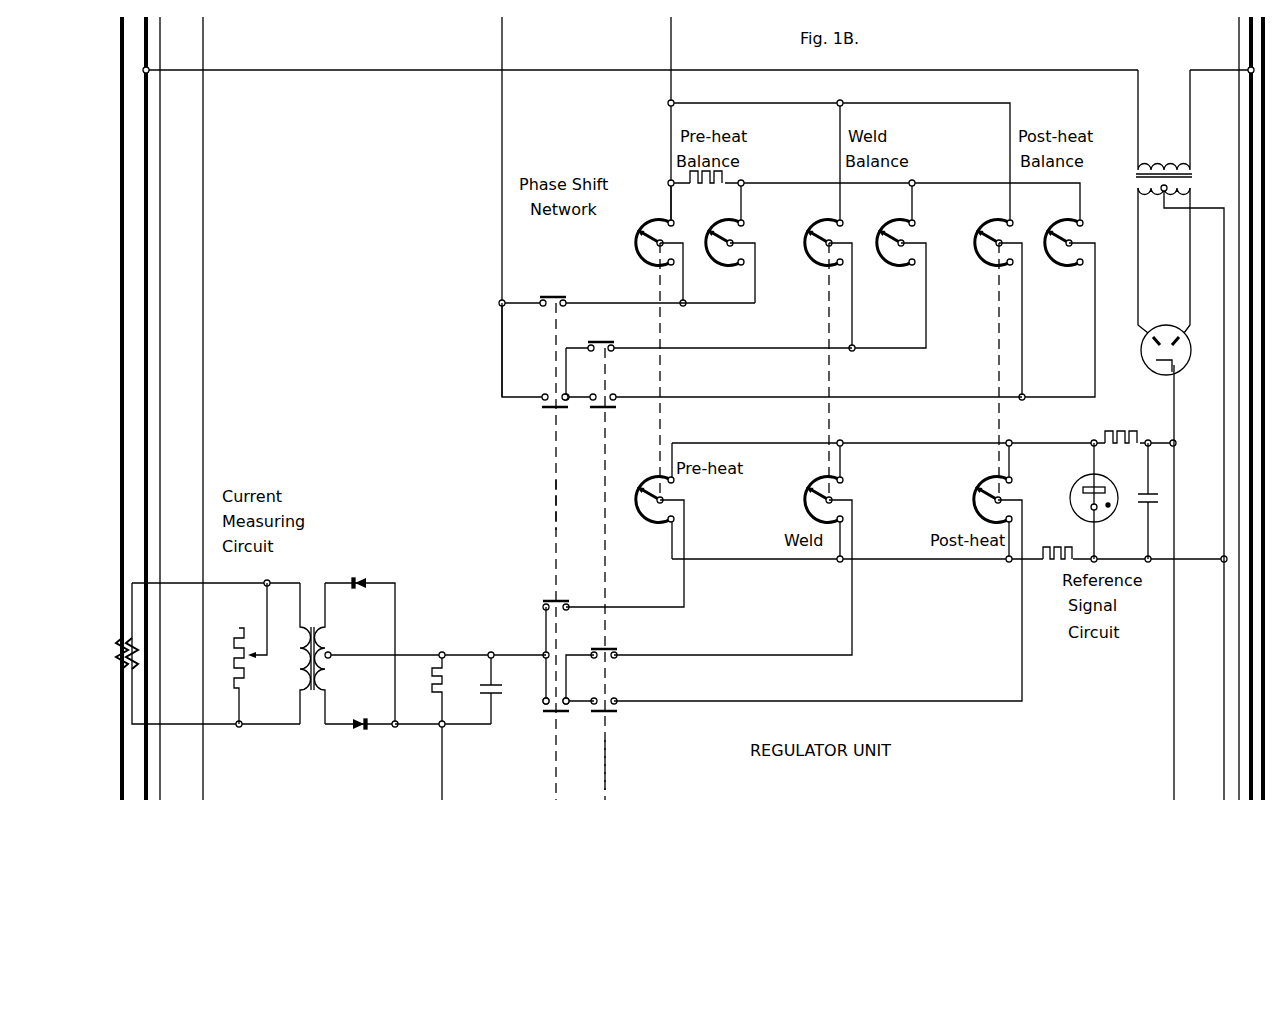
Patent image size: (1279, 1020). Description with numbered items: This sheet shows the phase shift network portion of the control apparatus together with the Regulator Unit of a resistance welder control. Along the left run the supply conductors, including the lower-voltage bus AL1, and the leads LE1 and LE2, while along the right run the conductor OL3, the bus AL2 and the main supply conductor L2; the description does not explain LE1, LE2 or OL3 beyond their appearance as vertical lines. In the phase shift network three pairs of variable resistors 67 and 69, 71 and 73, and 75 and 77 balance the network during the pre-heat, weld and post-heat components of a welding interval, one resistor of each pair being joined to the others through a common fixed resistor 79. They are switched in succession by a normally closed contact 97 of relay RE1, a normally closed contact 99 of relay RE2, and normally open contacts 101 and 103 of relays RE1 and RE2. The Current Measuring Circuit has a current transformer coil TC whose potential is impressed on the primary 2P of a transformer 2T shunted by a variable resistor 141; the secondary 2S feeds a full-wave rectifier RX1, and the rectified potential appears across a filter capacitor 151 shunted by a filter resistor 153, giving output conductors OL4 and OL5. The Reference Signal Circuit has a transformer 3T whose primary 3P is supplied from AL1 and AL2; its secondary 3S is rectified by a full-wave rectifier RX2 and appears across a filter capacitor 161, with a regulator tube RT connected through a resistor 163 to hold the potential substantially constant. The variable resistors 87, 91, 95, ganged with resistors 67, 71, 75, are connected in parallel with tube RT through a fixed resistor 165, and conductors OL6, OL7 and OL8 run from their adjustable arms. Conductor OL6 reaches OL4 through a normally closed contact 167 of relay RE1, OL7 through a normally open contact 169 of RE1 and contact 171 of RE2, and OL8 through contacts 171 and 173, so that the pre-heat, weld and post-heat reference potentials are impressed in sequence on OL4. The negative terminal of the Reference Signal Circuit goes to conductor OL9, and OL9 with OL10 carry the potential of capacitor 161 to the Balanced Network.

The pre-heat balance variable resistor 67 is at (643, 256).
The pre-heat balance variable resistor 69 is at (713, 256).
The weld balance variable resistor 71 is at (812, 256).
The weld balance variable resistor 73 is at (884, 256).
The post-heat balance variable resistor 75 is at (982, 256).
The post-heat balance variable resistor 77 is at (1052, 256).
The common fixed resistor 79 is at (704, 184).
The pre-heat variable resistor 87 is at (643, 514).
The weld variable resistor 91 is at (805, 497).
The post-heat variable resistor 95 is at (975, 500).
The normally closed contact 97 is at (555, 296).
The normally closed contact 99 is at (594, 342).
The normally open contact 101 is at (549, 409).
The normally open contact 103 is at (611, 409).
The variable resistor 141 is at (251, 626).
The filter capacitor 151 is at (487, 694).
The filter resistor 153 is at (446, 684).
The filter capacitor 161 is at (1145, 513).
The resistor 163 is at (1122, 430).
The fixed resistor 165 is at (1070, 546).
The normally closed contact 167 is at (550, 600).
The normally open contact 169 is at (545, 712).
The relay contact 171 is at (610, 648).
The normally open contact 173 is at (610, 712).
The current transformer coil TC is at (124, 646).
The lead LE1 is at (160, 240).
The lead LE2 is at (203, 188).
The bus conductor AL1 is at (147, 333).
The bus conductor AL2 is at (1250, 107).
The supply conductor L2 is at (1262, 724).
The output lead OL3 is at (1238, 40).
The output conductor OL4 is at (432, 654).
The output conductor OL5 is at (442, 776).
The output conductor OL6 is at (684, 595).
The output conductor OL7 is at (797, 645).
The output conductor OL8 is at (978, 700).
The output conductor OL9 is at (1223, 680).
The output conductor OL10 is at (1173, 735).
The relay RE1 is at (556, 507).
The relay RE2 is at (605, 764).
The full-wave rectifier RX1 is at (372, 620).
The full-wave rectifier RX2 is at (1168, 322).
The regulator tube RT is at (1081, 479).
The transformer primary 2P is at (298, 676).
The transformer secondary 2S is at (326, 668).
The transformer 2T is at (312, 692).
The transformer primary 3P is at (1163, 160).
The transformer secondary 3S is at (1150, 195).
The transformer 3T is at (1193, 172).